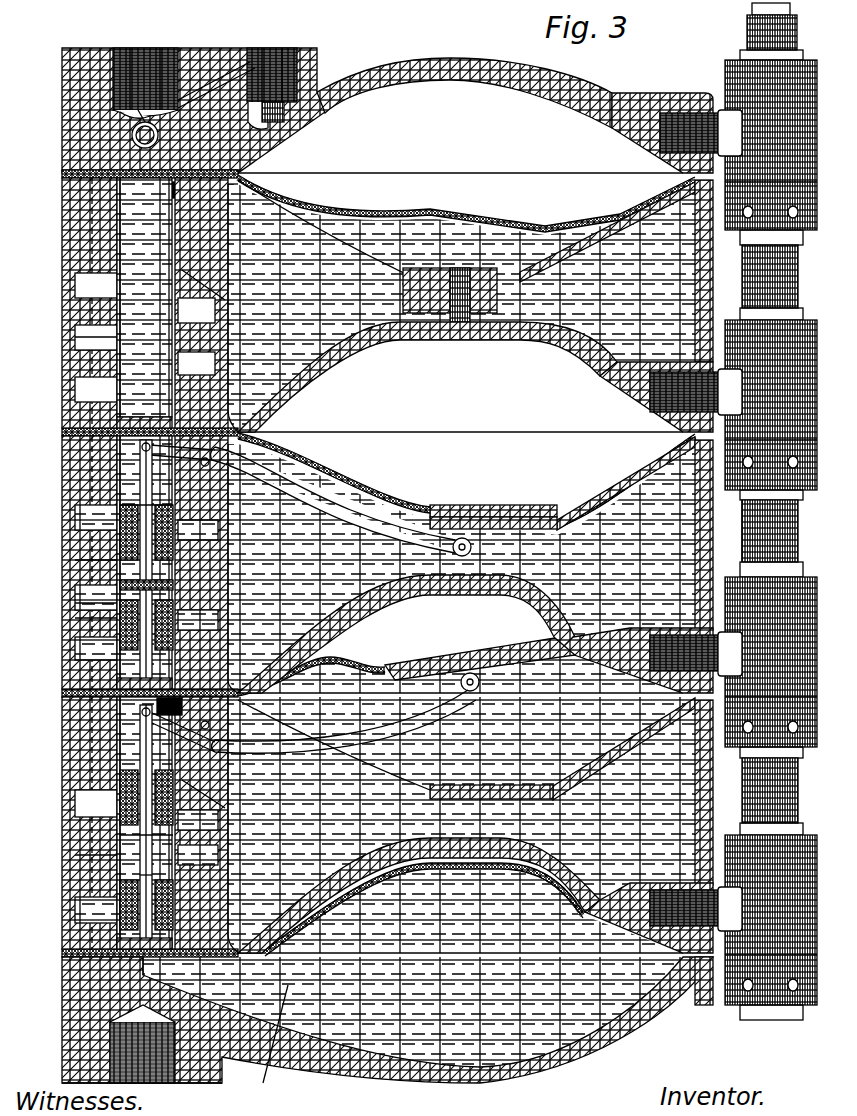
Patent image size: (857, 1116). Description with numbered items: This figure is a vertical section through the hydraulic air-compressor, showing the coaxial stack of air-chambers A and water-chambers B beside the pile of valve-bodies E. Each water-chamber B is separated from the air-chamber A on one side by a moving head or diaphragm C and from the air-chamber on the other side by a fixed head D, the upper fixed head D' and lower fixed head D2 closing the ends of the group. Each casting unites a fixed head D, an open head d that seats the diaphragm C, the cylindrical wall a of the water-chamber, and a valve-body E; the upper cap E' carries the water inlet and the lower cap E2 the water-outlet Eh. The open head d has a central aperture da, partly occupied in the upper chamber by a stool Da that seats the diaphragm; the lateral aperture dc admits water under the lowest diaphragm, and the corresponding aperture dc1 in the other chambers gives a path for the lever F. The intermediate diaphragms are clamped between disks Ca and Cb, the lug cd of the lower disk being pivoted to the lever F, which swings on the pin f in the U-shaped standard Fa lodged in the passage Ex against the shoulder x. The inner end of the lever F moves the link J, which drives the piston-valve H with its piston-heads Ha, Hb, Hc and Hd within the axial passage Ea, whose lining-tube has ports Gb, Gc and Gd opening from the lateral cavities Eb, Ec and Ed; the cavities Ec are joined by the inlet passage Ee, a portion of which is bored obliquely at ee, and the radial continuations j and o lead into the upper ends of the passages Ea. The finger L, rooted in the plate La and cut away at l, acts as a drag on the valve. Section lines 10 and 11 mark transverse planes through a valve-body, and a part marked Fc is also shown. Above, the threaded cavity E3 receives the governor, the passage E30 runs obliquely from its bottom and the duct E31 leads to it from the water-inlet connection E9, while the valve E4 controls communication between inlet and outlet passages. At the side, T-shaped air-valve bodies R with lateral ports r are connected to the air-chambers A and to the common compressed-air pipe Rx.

The upper cap E' is at (171, 110).
The water-inlet connection E9 is at (160, 55).
The duct E31 is at (225, 68).
The threaded cavity E3 is at (290, 58).
The valve E4 is at (130, 138).
The oblique inlet passage portion ee is at (135, 118).
The oblique passage E30 is at (262, 128).
The radial passage continuation j is at (150, 190).
The upper fixed head D' is at (464, 70).
The air-chamber A is at (504, 515).
The water-chamber B is at (432, 612).
The diaphragm C is at (548, 222).
The open head d is at (620, 235).
The central aperture da is at (545, 272).
The aperture dc1 is at (305, 240).
The lateral aperture dc is at (275, 1085).
The stool Da is at (458, 322).
The fixed head D is at (427, 637).
The lower fixed head D2 is at (468, 1078).
The valve-body E is at (69, 563).
The axial passage Ea is at (117, 255).
The lateral cavity Eb is at (85, 312).
The lateral cavity Ec is at (78, 345).
The water-inlet passage Ee is at (78, 278).
The lateral cavity Ed is at (253, 890).
The lever passage Ex is at (283, 800).
The water-outlet Eh is at (165, 1078).
The lower cap E2 is at (62, 1035).
The shoulder x is at (213, 543).
The cylindrical wall a is at (713, 275).
The air-valve body R is at (733, 511).
The lateral air ports r is at (790, 208).
The common air pipe Rx is at (758, 531).
The upper clamping disk Ca is at (485, 505).
The lower clamping disk Cb is at (430, 505).
The lug cd is at (468, 560).
The lever F is at (345, 525).
The standard Fa is at (228, 780).
The port Fc is at (115, 855).
The pivot-pin f is at (255, 458).
The link J is at (140, 445).
The piston-valve H is at (135, 540).
The piston-head Ha is at (135, 520).
The piston-head Hb is at (130, 585).
The piston-head Hc is at (135, 650).
The piston-head Hd is at (135, 688).
The section line 10 is at (78, 560).
The section line 11 is at (78, 603).
The finger L is at (45, 888).
The cut-away l is at (150, 880).
The plate La is at (110, 972).
The ports Gd is at (230, 625).
The ports Gb is at (100, 812).
The port Gc is at (120, 835).
The radial passage continuation o is at (140, 718).